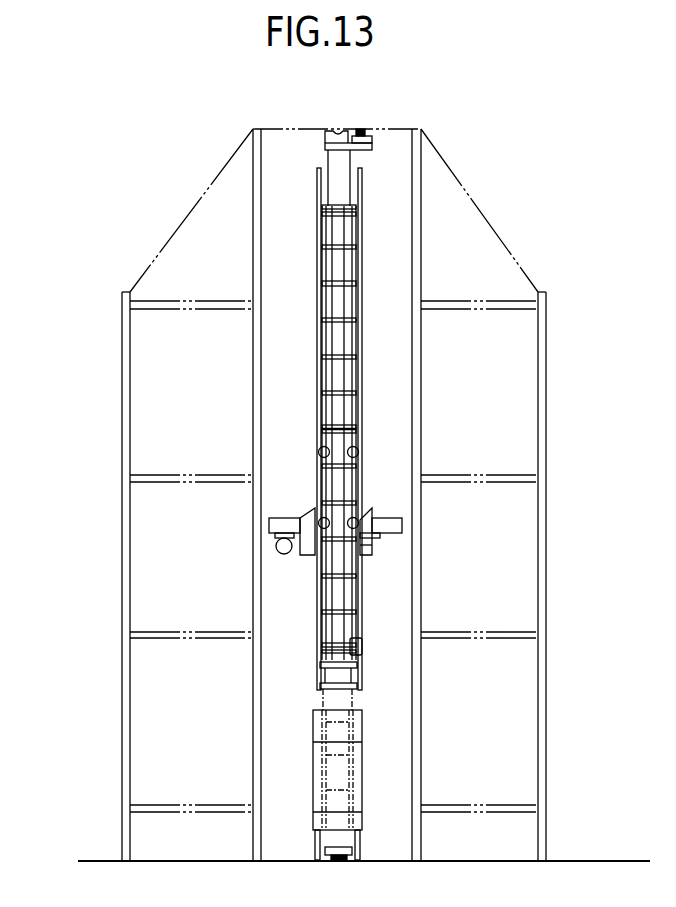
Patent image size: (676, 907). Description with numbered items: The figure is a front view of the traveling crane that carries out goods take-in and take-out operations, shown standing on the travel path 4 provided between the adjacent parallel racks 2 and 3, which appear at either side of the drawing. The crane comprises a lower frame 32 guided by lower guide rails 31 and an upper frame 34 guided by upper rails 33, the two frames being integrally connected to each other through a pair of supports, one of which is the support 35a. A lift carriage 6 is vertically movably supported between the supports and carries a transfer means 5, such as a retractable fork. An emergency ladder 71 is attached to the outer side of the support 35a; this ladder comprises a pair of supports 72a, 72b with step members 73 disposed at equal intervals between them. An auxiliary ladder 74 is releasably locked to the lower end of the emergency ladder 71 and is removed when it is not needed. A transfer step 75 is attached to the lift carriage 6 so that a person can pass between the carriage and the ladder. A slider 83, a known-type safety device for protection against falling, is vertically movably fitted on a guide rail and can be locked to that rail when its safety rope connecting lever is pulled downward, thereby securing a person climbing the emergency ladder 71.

The rack 2 is at (122, 413).
The rack 3 is at (538, 455).
The travel path 4 is at (400, 402).
The transfer means 5 is at (402, 518).
The lift carriage 6 is at (300, 556).
The lower guide rails 31 is at (333, 862).
The lower frame 32 is at (338, 843).
The upper rails 33 is at (362, 133).
The upper frame 34 is at (335, 138).
The support 35a is at (337, 180).
The emergency ladder 71 is at (362, 273).
The support 72a is at (358, 452).
The support 72b is at (320, 427).
The step members 73 is at (342, 352).
The auxiliary ladder 74 is at (350, 788).
The transfer step 75 is at (380, 552).
The slider 83 is at (362, 648).